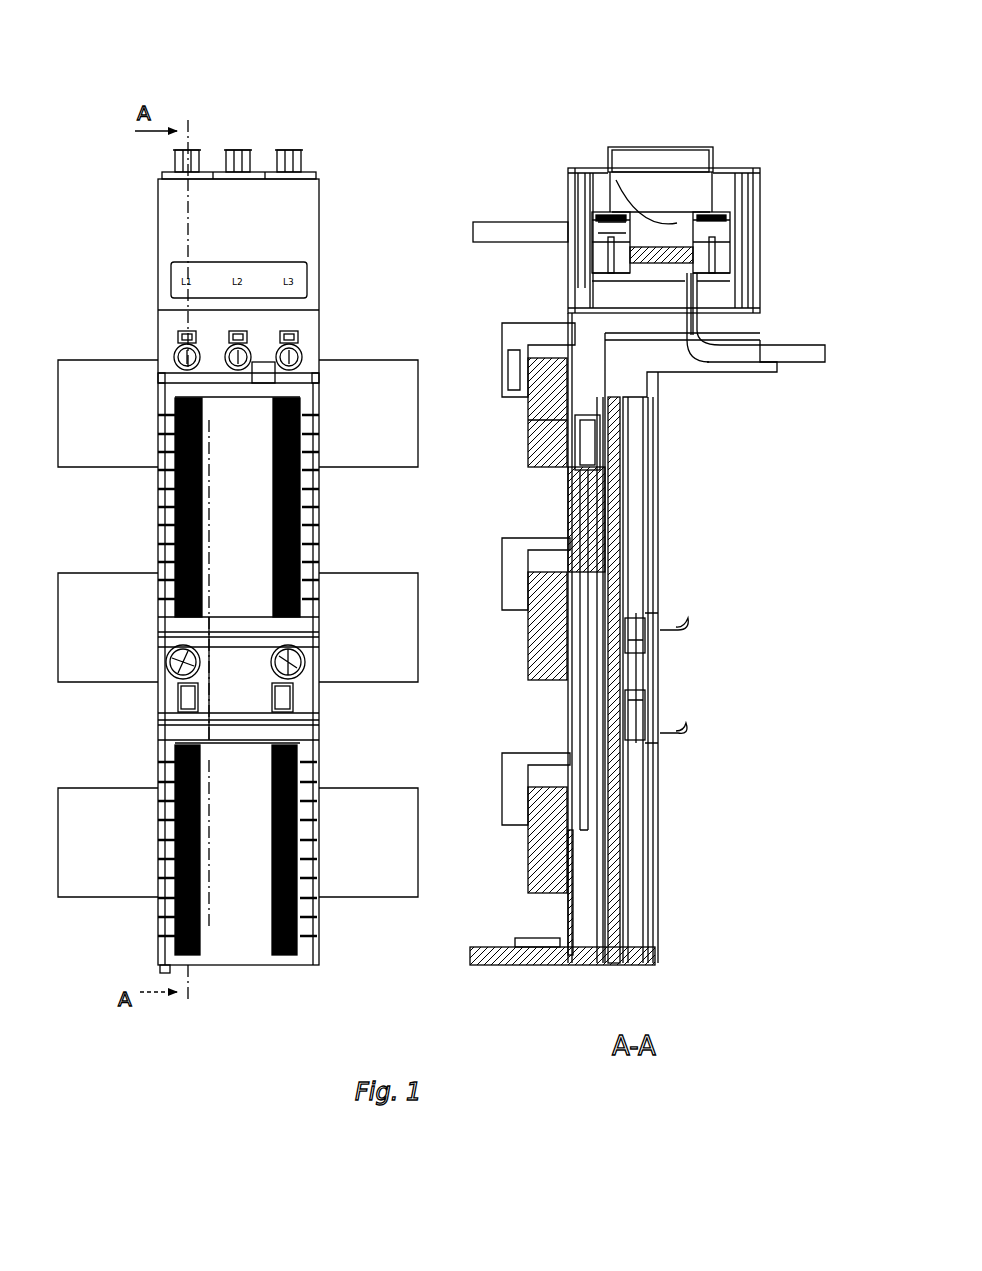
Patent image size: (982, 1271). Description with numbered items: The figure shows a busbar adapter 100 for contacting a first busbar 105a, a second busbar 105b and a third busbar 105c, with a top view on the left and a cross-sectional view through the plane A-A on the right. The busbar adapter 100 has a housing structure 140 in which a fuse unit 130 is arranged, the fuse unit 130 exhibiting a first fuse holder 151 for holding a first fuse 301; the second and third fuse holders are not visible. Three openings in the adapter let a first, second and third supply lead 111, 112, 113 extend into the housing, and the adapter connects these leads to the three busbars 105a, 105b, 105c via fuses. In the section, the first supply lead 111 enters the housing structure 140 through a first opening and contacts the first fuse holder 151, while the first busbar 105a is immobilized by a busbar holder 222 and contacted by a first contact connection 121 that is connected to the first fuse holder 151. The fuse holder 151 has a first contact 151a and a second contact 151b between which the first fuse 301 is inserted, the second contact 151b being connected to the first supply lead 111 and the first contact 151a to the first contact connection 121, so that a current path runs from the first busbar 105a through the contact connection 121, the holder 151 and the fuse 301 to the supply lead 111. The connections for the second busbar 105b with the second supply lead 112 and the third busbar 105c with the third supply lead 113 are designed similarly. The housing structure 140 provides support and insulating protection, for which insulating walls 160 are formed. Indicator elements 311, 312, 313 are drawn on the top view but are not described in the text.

The busbar adapter 100 is at (134, 38).
The housing structure 140 is at (321, 192).
The first indicator 311 is at (178, 336).
The second indicator 312 is at (243, 330).
The third indicator 313 is at (298, 330).
The first supply lead 111 is at (183, 353).
The second supply lead 112 is at (245, 353).
The third supply lead 113 is at (290, 353).
The first busbar 105a is at (540, 425).
The second busbar 105b is at (540, 650).
The third busbar 105c is at (542, 873).
The first fuse holder 151 is at (602, 100).
The first contact 151a is at (598, 233).
The second contact 151b is at (677, 250).
The fuse unit 130 is at (673, 123).
The first fuse 301 is at (677, 222).
The first contact connection 121 is at (570, 313).
The busbar holder 222 is at (513, 340).
The insulating walls 160 is at (650, 315).